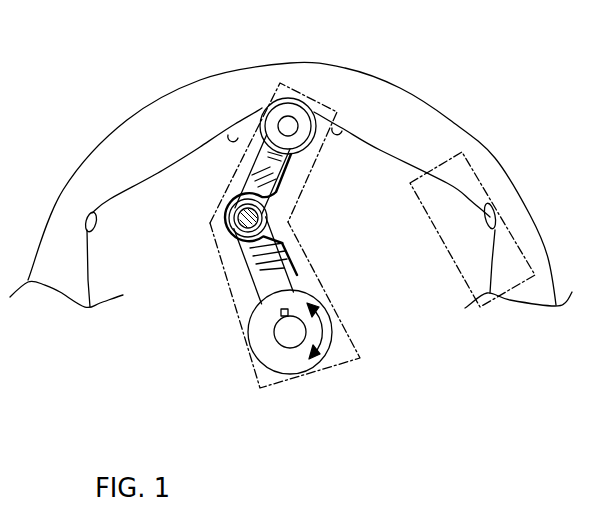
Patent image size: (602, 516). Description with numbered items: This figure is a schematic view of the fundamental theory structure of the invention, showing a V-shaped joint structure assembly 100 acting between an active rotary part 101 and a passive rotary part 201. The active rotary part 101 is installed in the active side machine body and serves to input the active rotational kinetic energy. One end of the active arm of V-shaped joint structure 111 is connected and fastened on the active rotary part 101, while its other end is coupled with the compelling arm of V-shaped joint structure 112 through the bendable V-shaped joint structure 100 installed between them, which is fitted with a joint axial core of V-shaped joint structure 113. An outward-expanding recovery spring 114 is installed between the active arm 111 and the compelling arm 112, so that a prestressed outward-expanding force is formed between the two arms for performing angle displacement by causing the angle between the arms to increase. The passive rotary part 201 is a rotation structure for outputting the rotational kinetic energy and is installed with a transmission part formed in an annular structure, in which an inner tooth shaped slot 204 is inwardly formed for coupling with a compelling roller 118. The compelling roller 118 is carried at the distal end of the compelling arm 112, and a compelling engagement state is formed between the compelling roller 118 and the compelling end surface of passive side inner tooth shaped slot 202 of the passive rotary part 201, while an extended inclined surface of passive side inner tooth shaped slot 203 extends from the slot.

The V-shaped joint structure assembly 100 is at (327, 372).
The active rotary part 101 is at (285, 335).
The active arm of V-shaped joint structure 111 is at (252, 293).
The compelling arm of V-shaped joint structure 112 is at (255, 155).
The joint axial core of V-shaped joint structure 113 is at (262, 218).
The outward-expanding recovery spring 114 is at (285, 192).
The compelling roller 118 is at (337, 138).
The passive rotary part 201 is at (133, 133).
The compelling end surface of passive side inner tooth shaped slot 202 is at (85, 228).
The extended inclined surface of passive side inner tooth shaped slot 203 is at (230, 137).
The inner tooth shaped slot 204 is at (433, 167).